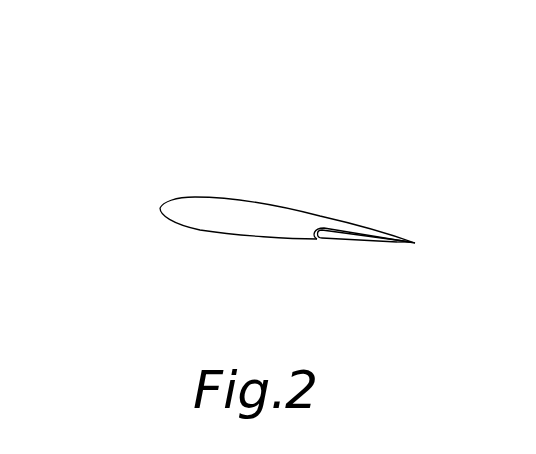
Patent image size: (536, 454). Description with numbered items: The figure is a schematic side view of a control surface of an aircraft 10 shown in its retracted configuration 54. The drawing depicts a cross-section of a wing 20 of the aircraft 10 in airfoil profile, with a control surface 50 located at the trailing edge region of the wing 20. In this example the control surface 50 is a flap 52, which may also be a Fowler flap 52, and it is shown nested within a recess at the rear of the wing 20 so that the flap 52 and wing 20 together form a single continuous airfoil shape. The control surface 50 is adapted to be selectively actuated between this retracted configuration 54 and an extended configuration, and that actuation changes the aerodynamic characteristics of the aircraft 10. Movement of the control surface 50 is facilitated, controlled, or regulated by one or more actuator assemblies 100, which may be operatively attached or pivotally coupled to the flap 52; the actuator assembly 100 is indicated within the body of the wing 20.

The aircraft 10 is at (136, 102).
The wing 20 is at (97, 169).
The control surface 50 is at (357, 253).
The flap 52 is at (395, 245).
The retracted configuration 54 is at (398, 185).
The actuator assembly 100 is at (255, 212).